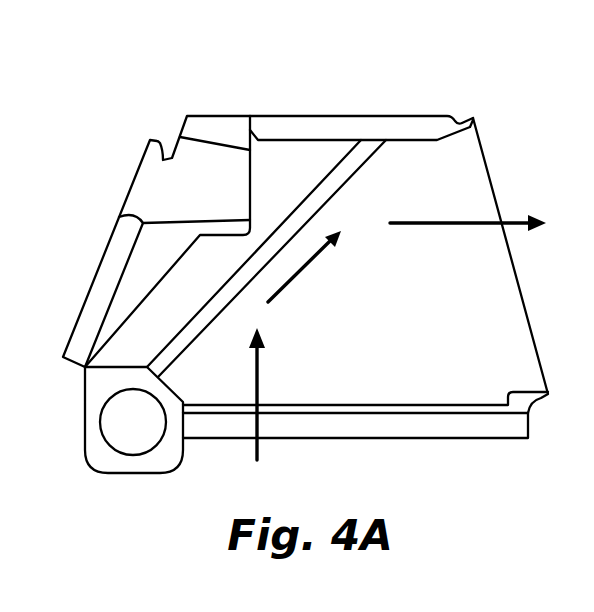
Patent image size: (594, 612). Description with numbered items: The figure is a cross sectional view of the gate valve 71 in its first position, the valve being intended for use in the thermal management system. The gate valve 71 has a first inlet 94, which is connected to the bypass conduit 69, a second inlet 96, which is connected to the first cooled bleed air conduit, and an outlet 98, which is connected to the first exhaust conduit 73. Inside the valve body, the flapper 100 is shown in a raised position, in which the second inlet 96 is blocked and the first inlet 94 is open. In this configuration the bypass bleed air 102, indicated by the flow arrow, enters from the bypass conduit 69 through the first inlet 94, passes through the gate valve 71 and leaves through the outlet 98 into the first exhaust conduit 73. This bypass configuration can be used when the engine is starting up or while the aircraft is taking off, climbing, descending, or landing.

The gate valve 71 is at (501, 83).
The second inlet 96 is at (131, 188).
The outlet 98 is at (515, 273).
The first inlet 94 is at (403, 438).
The flapper 100 is at (350, 170).
The bypass bleed air 102 is at (299, 274).
The first exhaust conduit 73 is at (492, 222).
The bypass conduit 69 is at (256, 408).